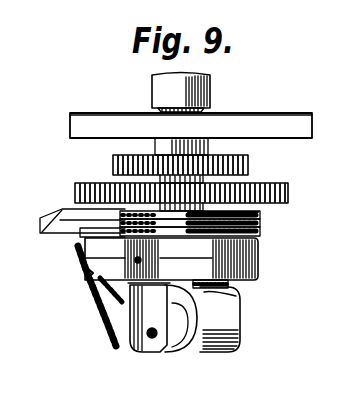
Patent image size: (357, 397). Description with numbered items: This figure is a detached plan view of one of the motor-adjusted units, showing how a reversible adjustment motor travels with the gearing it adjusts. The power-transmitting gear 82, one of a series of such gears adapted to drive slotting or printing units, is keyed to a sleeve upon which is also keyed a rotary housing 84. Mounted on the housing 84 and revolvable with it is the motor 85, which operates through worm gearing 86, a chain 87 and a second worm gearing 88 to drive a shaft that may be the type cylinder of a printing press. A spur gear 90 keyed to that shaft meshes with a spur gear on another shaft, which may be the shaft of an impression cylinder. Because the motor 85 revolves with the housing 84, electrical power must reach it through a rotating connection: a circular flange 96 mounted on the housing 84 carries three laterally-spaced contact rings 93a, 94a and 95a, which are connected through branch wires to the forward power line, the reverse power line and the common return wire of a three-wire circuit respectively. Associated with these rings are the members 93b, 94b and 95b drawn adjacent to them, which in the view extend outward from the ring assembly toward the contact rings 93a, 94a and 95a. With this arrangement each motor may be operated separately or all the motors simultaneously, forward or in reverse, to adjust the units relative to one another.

The power-transmitting gear 82 is at (75, 191).
The rotary housing 84 is at (250, 279).
The motor 85 is at (197, 356).
The worm gearing 86 is at (123, 353).
The chain 87 is at (105, 328).
The worm gearing 88 is at (87, 274).
The spur gear 90 is at (113, 162).
The contact ring 93a is at (257, 238).
The clutch ring arm 93b is at (72, 240).
The contact ring 94a is at (260, 228).
The clutch ring arm 94b is at (60, 235).
The contact ring 95a is at (260, 221).
The clutch ring arm 95b is at (45, 222).
The circular flange 96 is at (262, 214).